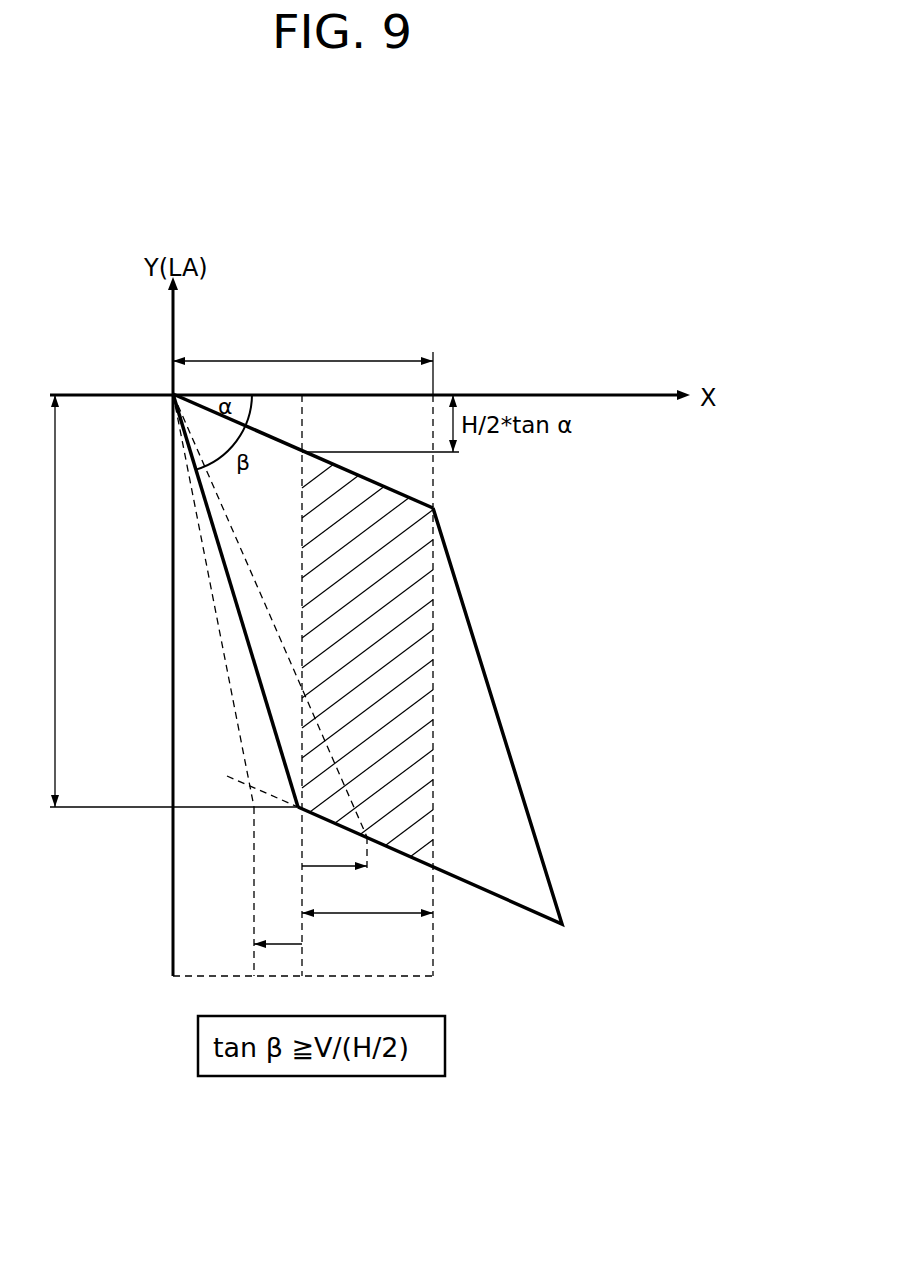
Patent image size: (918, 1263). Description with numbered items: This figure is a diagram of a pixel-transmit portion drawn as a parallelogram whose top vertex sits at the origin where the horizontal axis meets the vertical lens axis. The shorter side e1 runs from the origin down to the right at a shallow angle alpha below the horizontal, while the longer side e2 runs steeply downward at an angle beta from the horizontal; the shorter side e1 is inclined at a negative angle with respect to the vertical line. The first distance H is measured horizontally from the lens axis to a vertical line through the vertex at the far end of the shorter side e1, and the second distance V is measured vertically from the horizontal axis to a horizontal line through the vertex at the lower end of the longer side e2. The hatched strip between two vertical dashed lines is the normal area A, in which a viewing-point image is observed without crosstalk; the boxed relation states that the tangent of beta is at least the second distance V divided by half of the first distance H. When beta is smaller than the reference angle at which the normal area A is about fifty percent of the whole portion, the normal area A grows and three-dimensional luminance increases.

The shorter side e1 is at (400, 490).
The longer side e2 is at (245, 632).
The first distance H is at (303, 361).
The second distance V is at (163, 601).
The normal area A is at (367, 914).